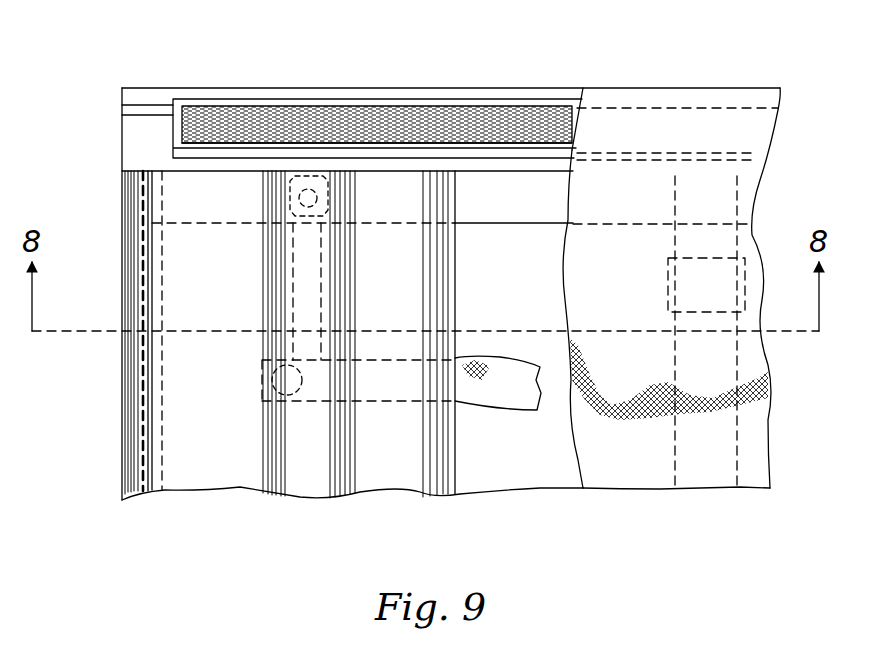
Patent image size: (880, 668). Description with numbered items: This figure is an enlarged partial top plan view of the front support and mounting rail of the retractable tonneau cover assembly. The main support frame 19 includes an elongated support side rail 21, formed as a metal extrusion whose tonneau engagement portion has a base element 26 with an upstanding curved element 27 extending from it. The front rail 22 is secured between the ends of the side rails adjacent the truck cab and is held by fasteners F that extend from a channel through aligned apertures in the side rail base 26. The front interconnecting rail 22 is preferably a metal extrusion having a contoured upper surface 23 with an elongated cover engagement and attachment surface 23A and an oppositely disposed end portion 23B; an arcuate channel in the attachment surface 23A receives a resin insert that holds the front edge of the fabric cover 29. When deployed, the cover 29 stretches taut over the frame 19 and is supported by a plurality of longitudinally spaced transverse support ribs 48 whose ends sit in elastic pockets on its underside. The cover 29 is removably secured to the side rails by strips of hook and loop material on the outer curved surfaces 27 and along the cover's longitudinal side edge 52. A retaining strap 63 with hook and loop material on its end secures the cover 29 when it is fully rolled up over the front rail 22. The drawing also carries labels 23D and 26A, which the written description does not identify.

The main support frame 19 is at (300, 82).
The support side rail 21 is at (168, 130).
The front rail 22 is at (115, 443).
The contoured upper surface 23 is at (210, 443).
The cover engagement and attachment surface 23A is at (152, 298).
The end portion 23B is at (437, 457).
The panel fold line 23D is at (140, 393).
The base element 26 is at (128, 163).
The frame flange 26A is at (452, 97).
The upstanding curved element 27 is at (172, 140).
The fabric cover 29 is at (626, 450).
The transverse support rib 48 is at (742, 430).
The longitudinal side edge 52 is at (240, 126).
The retaining strap 63 is at (375, 406).
The fastener F is at (283, 198).